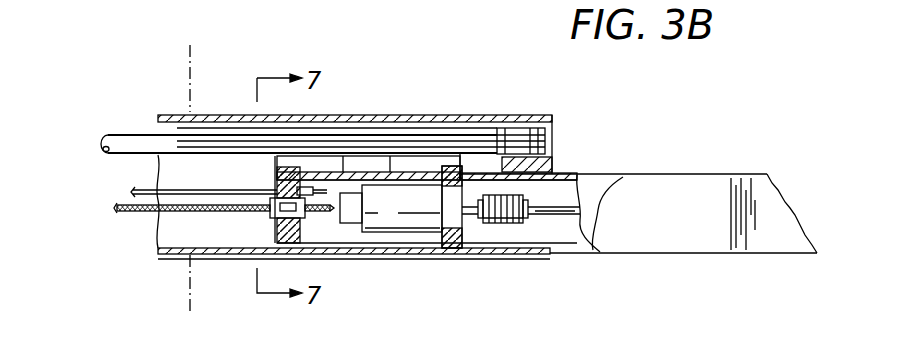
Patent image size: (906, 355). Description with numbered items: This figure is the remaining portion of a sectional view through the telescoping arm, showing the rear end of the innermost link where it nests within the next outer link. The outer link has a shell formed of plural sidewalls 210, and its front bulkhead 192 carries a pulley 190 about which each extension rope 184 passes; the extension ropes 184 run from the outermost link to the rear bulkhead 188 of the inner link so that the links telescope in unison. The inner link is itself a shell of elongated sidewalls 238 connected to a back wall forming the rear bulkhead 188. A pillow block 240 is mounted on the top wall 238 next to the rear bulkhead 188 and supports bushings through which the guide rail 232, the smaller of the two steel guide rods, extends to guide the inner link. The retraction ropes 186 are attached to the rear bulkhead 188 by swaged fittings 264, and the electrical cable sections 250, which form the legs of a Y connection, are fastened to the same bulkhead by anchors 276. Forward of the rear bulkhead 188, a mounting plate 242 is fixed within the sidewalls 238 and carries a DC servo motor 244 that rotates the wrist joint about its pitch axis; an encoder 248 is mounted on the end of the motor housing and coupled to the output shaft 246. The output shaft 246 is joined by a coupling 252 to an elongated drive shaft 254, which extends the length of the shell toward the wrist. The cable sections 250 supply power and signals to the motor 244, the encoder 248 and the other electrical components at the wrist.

The extension ropes 184 is at (400, 150).
The retraction ropes 186 is at (143, 189).
The rear bulkhead 188 is at (276, 238).
The pulley 190 is at (542, 128).
The front bulkhead 192 is at (553, 163).
The sidewalls 210 is at (503, 115).
The guide rail 232 is at (133, 140).
The sidewalls 238 is at (600, 192).
The pillow block 240 is at (275, 172).
The mounting plate 242 is at (452, 230).
The DC servo motor 244 is at (403, 222).
The output shaft 246 is at (487, 222).
The encoder 248 is at (350, 222).
The electrical cable sections 250 is at (145, 212).
The coupling 252 is at (528, 220).
The drive shaft 254 is at (527, 210).
The swaged fittings 264 is at (305, 186).
The anchors 276 is at (300, 215).